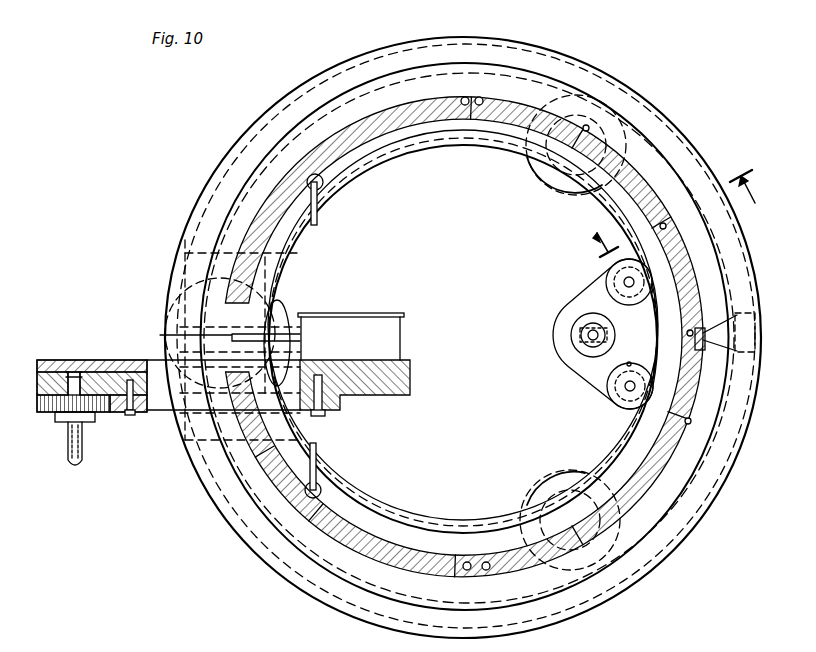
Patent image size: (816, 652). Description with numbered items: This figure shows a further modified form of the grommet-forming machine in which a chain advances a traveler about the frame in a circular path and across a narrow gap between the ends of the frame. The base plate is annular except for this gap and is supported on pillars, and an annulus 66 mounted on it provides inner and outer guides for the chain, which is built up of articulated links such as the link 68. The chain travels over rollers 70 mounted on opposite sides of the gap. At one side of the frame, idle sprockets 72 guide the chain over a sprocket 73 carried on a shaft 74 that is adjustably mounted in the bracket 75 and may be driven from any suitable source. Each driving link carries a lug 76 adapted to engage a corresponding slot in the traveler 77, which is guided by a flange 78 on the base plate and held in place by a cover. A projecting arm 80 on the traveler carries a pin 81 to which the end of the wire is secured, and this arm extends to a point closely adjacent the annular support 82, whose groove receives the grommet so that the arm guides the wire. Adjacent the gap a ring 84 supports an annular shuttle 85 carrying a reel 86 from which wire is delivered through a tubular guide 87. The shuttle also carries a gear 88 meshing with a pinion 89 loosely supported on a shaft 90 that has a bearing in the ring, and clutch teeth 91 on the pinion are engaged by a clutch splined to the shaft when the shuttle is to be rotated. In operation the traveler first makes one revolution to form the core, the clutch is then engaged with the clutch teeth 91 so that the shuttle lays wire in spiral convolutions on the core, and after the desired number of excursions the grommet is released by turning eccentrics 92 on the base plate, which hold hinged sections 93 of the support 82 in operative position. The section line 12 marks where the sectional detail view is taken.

The section line 12- 12 is at (676, 216).
The annulus 66 is at (548, 192).
The articulated link 68 is at (628, 363).
The rollers 70 is at (277, 327).
The idle sprockets 72 is at (606, 270).
The sprocket 73 is at (589, 347).
The shaft 74 is at (588, 337).
The bracket 75 is at (575, 310).
The lug 76 is at (600, 370).
The traveler 77 is at (760, 286).
The flange 78 is at (762, 378).
The projecting arm 80 is at (703, 345).
The pin 81 is at (732, 330).
The annular support 82 is at (690, 408).
The ring 84 is at (40, 360).
The annular shuttle 85 is at (105, 360).
The reel 86 is at (357, 330).
The tubular guide 87 is at (283, 330).
The gear 88 is at (116, 414).
The pinion 89 is at (55, 414).
The shaft 90 is at (82, 458).
The clutch teeth 91 is at (72, 445).
The eccentrics 92 is at (323, 185).
The hinged sections 93 is at (365, 133).